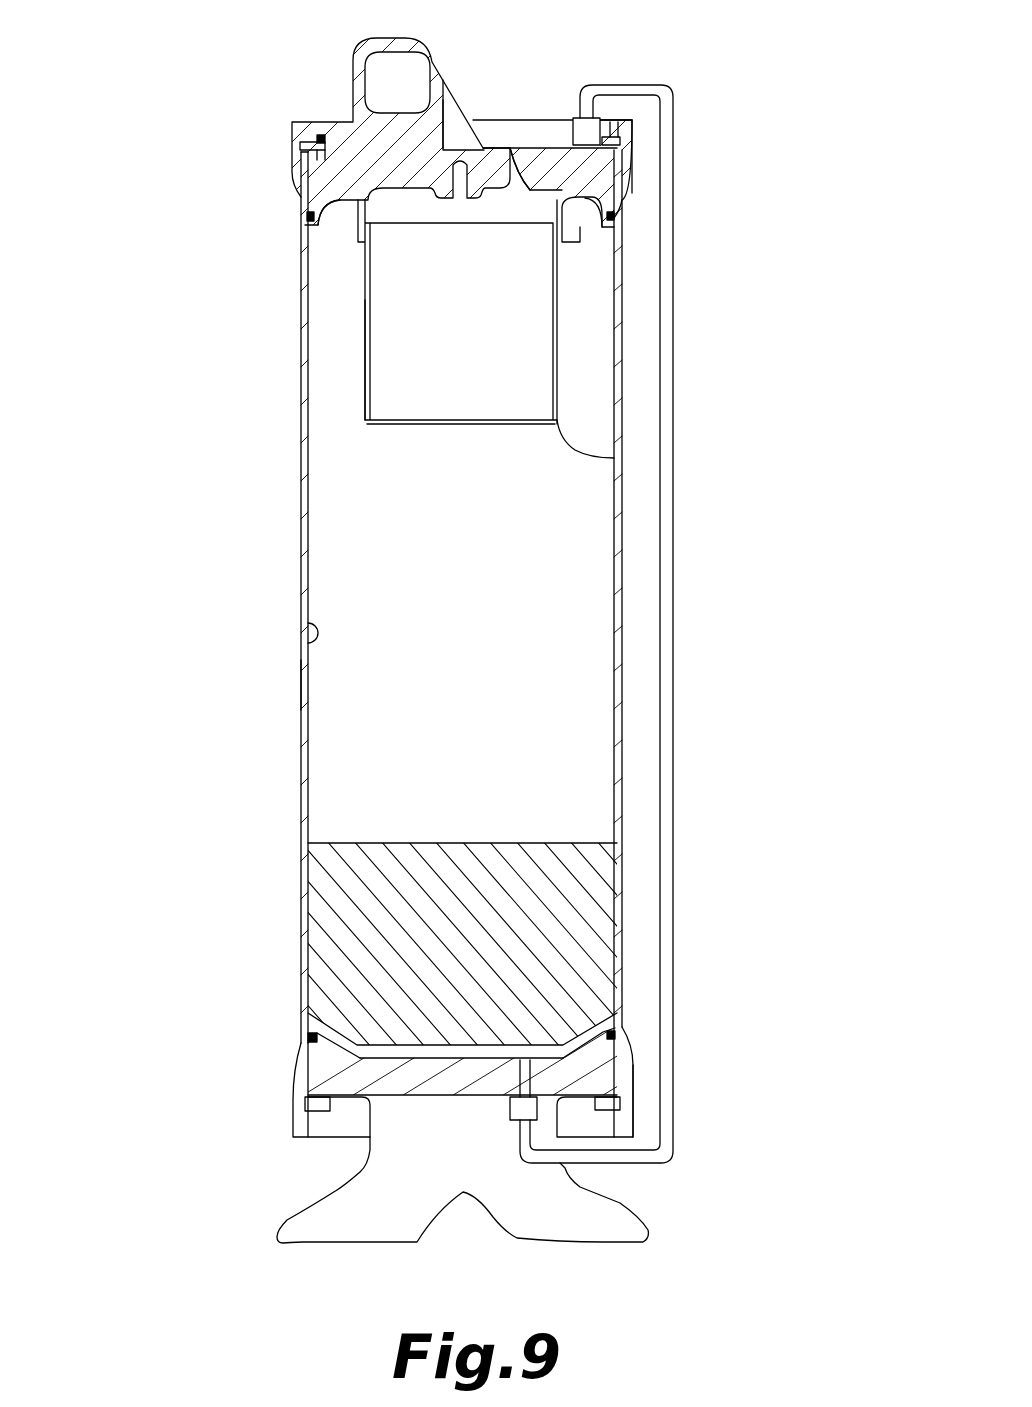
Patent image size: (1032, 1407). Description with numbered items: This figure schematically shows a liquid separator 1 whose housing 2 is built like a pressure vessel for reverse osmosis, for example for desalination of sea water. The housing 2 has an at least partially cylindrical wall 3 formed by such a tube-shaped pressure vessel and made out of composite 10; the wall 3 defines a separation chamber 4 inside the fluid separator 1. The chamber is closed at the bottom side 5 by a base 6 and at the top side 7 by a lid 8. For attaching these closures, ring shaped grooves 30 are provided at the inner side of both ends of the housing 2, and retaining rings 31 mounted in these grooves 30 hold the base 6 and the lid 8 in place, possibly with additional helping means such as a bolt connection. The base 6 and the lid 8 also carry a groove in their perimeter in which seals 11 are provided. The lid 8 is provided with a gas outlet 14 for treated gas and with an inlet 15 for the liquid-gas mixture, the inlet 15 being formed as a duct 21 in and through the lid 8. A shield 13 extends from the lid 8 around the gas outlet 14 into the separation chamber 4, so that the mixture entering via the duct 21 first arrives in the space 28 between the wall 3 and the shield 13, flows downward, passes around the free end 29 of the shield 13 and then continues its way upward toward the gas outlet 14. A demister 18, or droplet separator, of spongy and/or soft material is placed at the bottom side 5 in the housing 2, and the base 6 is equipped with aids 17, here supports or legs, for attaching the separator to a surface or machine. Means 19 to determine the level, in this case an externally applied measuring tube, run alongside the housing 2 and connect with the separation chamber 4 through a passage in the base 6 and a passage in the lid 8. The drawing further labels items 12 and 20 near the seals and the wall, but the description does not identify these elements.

The liquid separator 1 is at (677, 60).
The housing 2 is at (300, 172).
The wall 3 is at (303, 423).
The separation chamber 4 is at (468, 552).
The bottom side 5 is at (710, 1075).
The base 6 is at (323, 1077).
The top side 7 is at (708, 168).
The lid 8 is at (427, 150).
The composite 10 is at (300, 682).
The seals 11 is at (303, 217).
The sealing ring 12 is at (315, 223).
The shield 13 is at (365, 357).
The gas outlet 14 is at (527, 165).
The inlet 15 is at (397, 100).
The aids 17 is at (357, 1207).
The demister 18 is at (578, 923).
The means to determine the level 19 is at (665, 686).
The wall opening 20 is at (307, 623).
The duct 21 is at (440, 137).
The space 28 is at (360, 396).
The free end 29 is at (575, 448).
The ring shaped grooves 30 is at (302, 145).
The retaining rings 31 is at (312, 135).